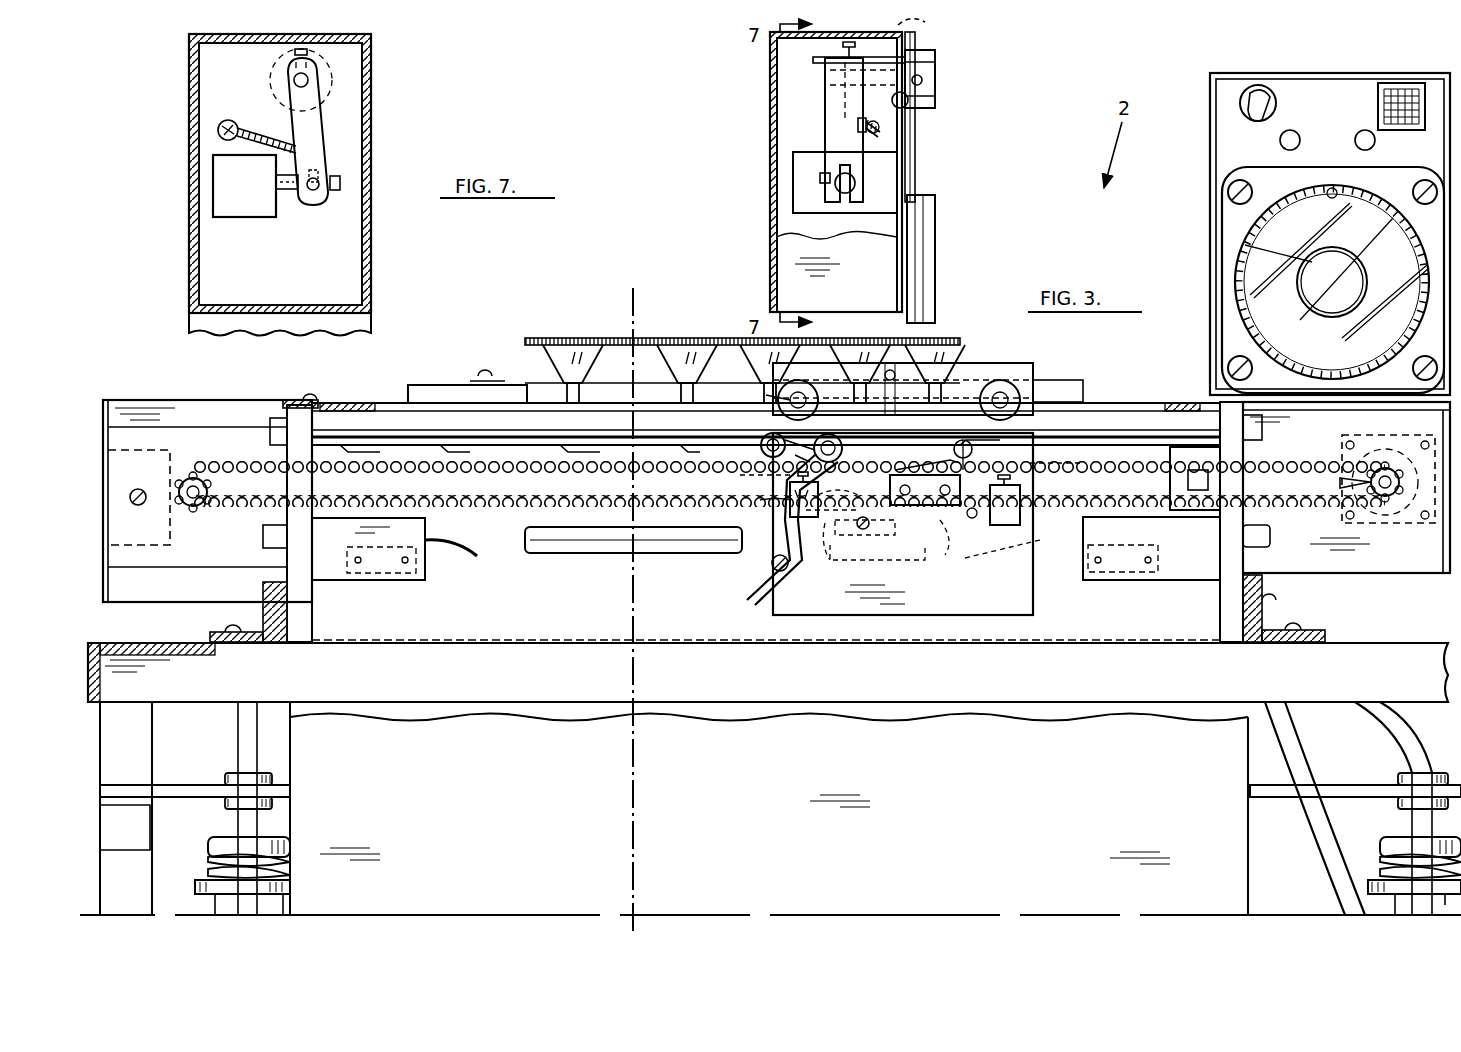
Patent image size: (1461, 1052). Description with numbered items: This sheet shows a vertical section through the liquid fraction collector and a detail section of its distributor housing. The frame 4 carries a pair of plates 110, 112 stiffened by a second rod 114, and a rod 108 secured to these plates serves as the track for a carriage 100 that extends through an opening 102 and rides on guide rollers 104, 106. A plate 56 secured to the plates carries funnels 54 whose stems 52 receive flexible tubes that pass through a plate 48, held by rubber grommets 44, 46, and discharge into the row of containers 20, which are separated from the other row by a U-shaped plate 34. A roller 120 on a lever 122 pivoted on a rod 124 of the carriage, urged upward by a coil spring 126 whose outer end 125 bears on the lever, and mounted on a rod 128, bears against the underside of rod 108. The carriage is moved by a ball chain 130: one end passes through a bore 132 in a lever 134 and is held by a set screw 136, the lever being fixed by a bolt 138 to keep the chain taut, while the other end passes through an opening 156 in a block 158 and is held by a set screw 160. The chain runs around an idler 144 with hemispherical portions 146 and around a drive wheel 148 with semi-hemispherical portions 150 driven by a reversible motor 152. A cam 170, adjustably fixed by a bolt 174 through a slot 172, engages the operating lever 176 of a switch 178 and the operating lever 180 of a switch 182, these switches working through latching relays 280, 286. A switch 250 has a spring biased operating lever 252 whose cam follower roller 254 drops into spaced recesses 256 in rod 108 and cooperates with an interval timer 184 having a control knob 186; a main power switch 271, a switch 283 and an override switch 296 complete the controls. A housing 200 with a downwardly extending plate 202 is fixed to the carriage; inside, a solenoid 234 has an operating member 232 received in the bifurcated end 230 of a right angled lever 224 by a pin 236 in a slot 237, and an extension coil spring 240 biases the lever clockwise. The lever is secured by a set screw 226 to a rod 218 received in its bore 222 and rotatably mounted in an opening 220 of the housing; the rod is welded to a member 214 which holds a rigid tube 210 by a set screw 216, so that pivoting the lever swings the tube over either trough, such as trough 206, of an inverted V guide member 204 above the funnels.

In FIG. 3, the frame 4 is at (127, 650).
In FIG. 3, the containers 20 is at (272, 920).
In FIG. 3, the U-shaped plate 34 is at (760, 803).
In FIG. 3, the rubber grommet 44 is at (230, 777).
In FIG. 3, the rubber grommet 46 is at (228, 802).
In FIG. 3, the plate 48 is at (186, 792).
In FIG. 3, the stem 52 is at (572, 386).
In FIG. 3, the funnel 54 is at (548, 360).
In FIG. 3, the plate 56 is at (444, 386).
In FIG. 3, the carriage 100 is at (1025, 588).
In FIG. 3, the opening 102 is at (386, 402).
In FIG. 3, the guide roller 104 is at (1006, 384).
In FIG. 3, the guide roller 106 is at (785, 396).
In FIG. 3, the rod 108 is at (1130, 410).
In FIG. 3, the plate 110 is at (1246, 575).
In FIG. 3, the plate 112 is at (302, 618).
In FIG. 3, the second rod 114 is at (550, 553).
In FIG. 3, the roller 120 is at (760, 447).
In FIG. 3, the lever 122 is at (815, 446).
In FIG. 3, the rod 124 is at (832, 502).
In FIG. 3, the outer end 125 is at (777, 507).
In FIG. 3, the coil spring 126 is at (842, 446).
In FIG. 3, the rod 128 is at (785, 455).
In FIG. 3, the ball chain 130 is at (503, 504).
In FIG. 3, the bore 132 is at (780, 480).
In FIG. 3, the lever 134 is at (792, 531).
In FIG. 3, the set screw 136 is at (820, 485).
In FIG. 3, the bolt 138 is at (768, 568).
In FIG. 3, the idler 144 is at (186, 505).
In FIG. 3, the hemispherical portions 146 is at (210, 492).
In FIG. 3, the drive wheel 148 is at (1393, 500).
In FIG. 3, the semi-hemispherical portions 150 is at (1345, 483).
In FIG. 3, the reversible motor 152 is at (1366, 476).
In FIG. 3, the opening 156 is at (1023, 489).
In FIG. 3, the block 158 is at (978, 522).
In FIG. 3, the set screw 160 is at (1035, 480).
In FIG. 3, the cam 170 is at (937, 560).
In FIG. 3, the slot 172 is at (879, 562).
In FIG. 3, the bolt 174 is at (858, 540).
In FIG. 3, the operating lever 176 is at (467, 556).
In FIG. 3, the switch 178 is at (382, 590).
In FIG. 3, the operating lever 180 is at (1058, 548).
In FIG. 3, the switch 182 is at (1115, 580).
In FIG. 3, the timer 184 is at (1226, 264).
In FIG. 3, the control knob 186 is at (1352, 295).
In FIG. 7, the housing 200 is at (189, 196).
In FIG. 3, the housing 200 is at (770, 66).
In FIG. 7, the plate 202 is at (372, 323).
In FIG. 3, the plate 202 is at (900, 323).
In FIG. 3, the inverted V guide member 204 is at (948, 240).
In FIG. 3, the trough 206 is at (927, 268).
In FIG. 3, the rigid tube 210 is at (915, 141).
In FIG. 3, the member 214 is at (937, 60).
In FIG. 3, the set screw 216 is at (922, 81).
In FIG. 7, the rod 218 is at (293, 85).
In FIG. 3, the rod 218 is at (925, 26).
In FIG. 3, the opening 220 is at (908, 106).
In FIG. 3, the bore 222 is at (838, 72).
In FIG. 7, the right angled lever 224 is at (315, 125).
In FIG. 3, the right angled lever 224 is at (833, 128).
In FIG. 7, the set screw 226 is at (295, 52).
In FIG. 3, the set screw 226 is at (843, 47).
In FIG. 7, the bifurcated end 230 is at (318, 210).
In FIG. 3, the bifurcated end 230 is at (822, 190).
In FIG. 7, the operating member 232 is at (342, 195).
In FIG. 3, the operating member 232 is at (842, 195).
In FIG. 7, the solenoid 234 is at (253, 224).
In FIG. 3, the solenoid 234 is at (805, 182).
In FIG. 7, the pin 236 is at (320, 184).
In FIG. 3, the pin 236 is at (858, 183).
In FIG. 7, the slot 237 is at (320, 178).
In FIG. 7, the extension coil spring 240 is at (255, 147).
In FIG. 3, the extension coil spring 240 is at (857, 122).
In FIG. 3, the switch 250 is at (898, 478).
In FIG. 3, the operating lever 252 is at (935, 472).
In FIG. 3, the cam follower roller 254 is at (975, 446).
In FIG. 3, the recesses 256 is at (568, 446).
In FIG. 3, the main power switch 271 is at (1255, 120).
In FIG. 3, the latching relay 280 is at (170, 460).
In FIG. 3, the switch 283 is at (1298, 143).
In FIG. 3, the latching relay 286 is at (1218, 492).
In FIG. 3, the override switch 296 is at (1374, 143).